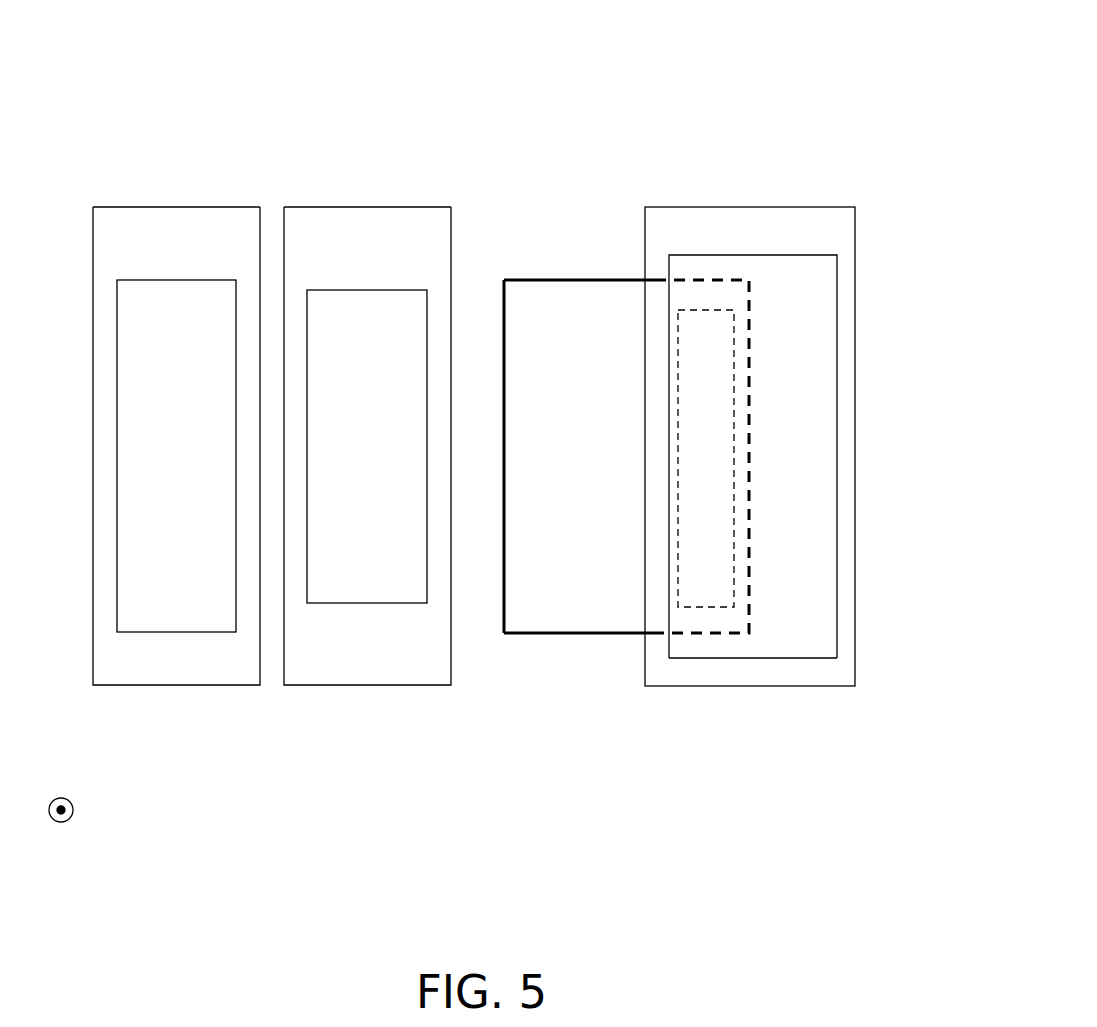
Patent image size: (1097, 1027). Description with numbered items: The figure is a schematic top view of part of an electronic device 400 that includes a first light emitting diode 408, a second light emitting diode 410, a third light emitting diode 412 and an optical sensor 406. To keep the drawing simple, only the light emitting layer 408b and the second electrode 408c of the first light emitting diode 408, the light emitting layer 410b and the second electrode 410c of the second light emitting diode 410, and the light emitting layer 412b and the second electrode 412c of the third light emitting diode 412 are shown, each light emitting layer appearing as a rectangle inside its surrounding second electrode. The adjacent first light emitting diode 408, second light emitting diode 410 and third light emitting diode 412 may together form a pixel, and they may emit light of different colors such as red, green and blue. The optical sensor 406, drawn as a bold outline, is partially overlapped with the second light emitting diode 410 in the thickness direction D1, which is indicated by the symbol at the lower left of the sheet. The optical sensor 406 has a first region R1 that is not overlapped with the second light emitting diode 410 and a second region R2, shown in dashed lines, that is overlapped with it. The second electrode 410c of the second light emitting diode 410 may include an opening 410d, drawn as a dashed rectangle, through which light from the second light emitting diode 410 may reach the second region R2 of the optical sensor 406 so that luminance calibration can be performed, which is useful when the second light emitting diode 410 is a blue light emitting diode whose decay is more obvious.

The electronic device 400 is at (758, 100).
The optical sensor 406 is at (580, 305).
The first light emitting diode 408 is at (423, 686).
The light emitting layer 408b is at (364, 575).
The second electrode 408c is at (363, 235).
The second light emitting diode 410 is at (755, 687).
The light emitting layer 410b is at (813, 620).
The second electrode 410c is at (845, 597).
The opening 410d is at (718, 308).
The third light emitting diode 412 is at (233, 686).
The light emitting layer 412b is at (174, 613).
The second electrode 412c is at (174, 235).
The first region R1 is at (578, 600).
The second region R2 is at (685, 620).
The thickness direction D1 is at (62, 791).